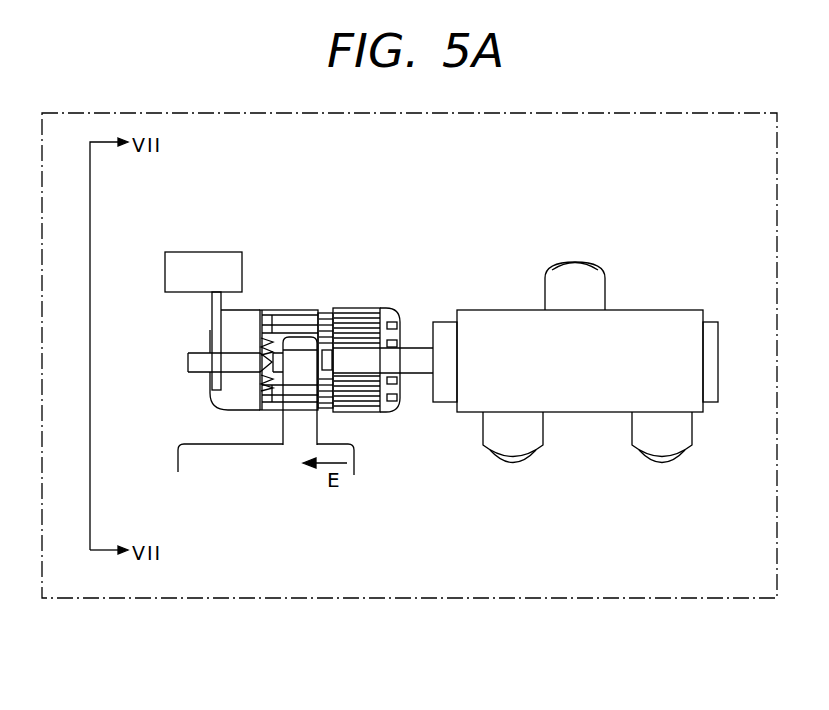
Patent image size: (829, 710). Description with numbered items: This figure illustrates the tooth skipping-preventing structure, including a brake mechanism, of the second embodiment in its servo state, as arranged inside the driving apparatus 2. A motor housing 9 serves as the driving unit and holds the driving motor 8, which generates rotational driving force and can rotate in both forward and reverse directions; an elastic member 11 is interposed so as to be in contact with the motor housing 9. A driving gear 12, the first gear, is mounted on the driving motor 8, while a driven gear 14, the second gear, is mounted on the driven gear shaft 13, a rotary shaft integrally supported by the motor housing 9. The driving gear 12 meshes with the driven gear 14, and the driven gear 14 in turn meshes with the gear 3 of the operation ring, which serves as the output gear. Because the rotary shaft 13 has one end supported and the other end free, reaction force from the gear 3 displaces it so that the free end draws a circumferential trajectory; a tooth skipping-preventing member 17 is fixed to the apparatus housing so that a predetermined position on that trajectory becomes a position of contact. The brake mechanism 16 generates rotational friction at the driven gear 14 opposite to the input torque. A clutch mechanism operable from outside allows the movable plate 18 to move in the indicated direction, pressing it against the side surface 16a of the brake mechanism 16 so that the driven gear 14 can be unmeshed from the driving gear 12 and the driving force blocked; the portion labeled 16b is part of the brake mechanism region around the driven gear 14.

The driving apparatus 2 is at (201, 113).
The gear 3 is at (272, 316).
The driving motor 8 is at (714, 322).
The motor housing 9 is at (661, 320).
The elastic member 11 is at (511, 455).
The driving gear 12 is at (366, 318).
The driven gear shaft 13 is at (187, 362).
The driven gear 14 is at (323, 313).
The brake mechanism 16 is at (268, 376).
The side surface 16a is at (287, 384).
The gear teeth 16b is at (268, 366).
The tooth skipping-preventing member 17 is at (185, 252).
The movable plate 18 is at (317, 428).